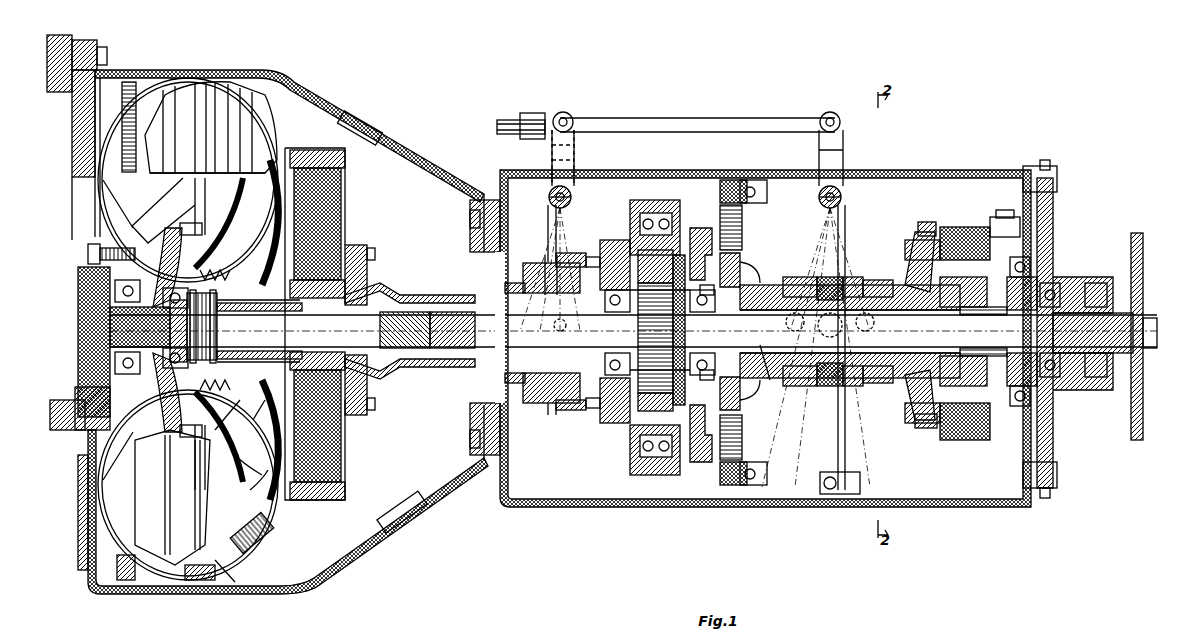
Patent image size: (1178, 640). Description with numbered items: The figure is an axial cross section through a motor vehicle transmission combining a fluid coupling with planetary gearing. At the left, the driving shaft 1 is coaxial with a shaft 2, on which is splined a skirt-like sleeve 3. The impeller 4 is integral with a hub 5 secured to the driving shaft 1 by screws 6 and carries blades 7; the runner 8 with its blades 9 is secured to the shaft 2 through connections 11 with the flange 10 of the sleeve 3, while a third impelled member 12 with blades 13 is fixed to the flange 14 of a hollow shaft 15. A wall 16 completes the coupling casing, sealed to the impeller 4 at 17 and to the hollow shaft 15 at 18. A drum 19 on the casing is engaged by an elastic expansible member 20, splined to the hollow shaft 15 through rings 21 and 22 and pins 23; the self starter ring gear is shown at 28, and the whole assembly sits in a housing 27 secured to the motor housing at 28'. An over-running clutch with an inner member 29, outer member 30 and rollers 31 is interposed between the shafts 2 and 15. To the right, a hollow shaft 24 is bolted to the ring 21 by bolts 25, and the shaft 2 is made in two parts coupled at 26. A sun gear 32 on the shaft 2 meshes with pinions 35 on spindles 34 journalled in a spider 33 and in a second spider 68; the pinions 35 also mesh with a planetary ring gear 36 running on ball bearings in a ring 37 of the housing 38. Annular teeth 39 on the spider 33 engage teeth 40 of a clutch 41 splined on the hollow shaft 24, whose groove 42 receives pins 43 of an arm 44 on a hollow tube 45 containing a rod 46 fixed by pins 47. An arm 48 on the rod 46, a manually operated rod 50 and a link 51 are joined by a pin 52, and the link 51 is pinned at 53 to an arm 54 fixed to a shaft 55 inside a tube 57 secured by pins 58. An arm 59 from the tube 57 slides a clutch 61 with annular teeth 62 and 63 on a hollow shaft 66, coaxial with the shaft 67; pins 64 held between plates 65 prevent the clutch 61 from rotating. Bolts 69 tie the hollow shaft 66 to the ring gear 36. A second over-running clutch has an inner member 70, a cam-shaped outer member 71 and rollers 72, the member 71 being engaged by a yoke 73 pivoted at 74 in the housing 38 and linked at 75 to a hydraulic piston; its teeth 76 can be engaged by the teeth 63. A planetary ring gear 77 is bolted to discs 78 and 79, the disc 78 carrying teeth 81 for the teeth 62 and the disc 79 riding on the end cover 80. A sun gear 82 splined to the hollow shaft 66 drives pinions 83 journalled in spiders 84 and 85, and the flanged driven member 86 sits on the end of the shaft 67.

The driving shaft 1 is at (80, 318).
The shaft 2 is at (130, 330).
The sleeve 3 is at (210, 265).
The impeller 4 is at (105, 535).
The hub 5 is at (120, 365).
The screws 6 is at (88, 253).
The blades 7 is at (125, 195).
The runner 8 is at (230, 583).
The blades 9 is at (182, 180).
The flange 10 is at (180, 225).
The connections 11 is at (195, 205).
The impelled member 12 is at (260, 483).
The blades 13 is at (251, 468).
The flange 14 is at (165, 268).
The hollow shaft 15 is at (310, 311).
The wall 16 is at (240, 120).
The seal location 17 is at (205, 85).
The seal location 18 is at (238, 255).
The drum 19 is at (305, 150).
The elastic expansible member 20 is at (345, 205).
The ring 21 is at (352, 248).
The ring 22 is at (256, 423).
The pins 23 is at (258, 331).
The hollow shaft 24 is at (420, 295).
The bolts 25 is at (375, 254).
The coupling 26 is at (420, 350).
The housing 27 is at (440, 470).
The self starter ring gear 28 is at (97, 314).
The motor housing attachment 28' is at (64, 302).
The inner member 29 is at (232, 326).
The outer member 30 is at (220, 326).
The rollers 31 is at (225, 425).
The sun gear 32 is at (661, 330).
The spider 33 is at (611, 333).
The spindles 34 is at (655, 353).
The pinions 35 is at (641, 369).
The planetary ring gear 36 is at (625, 240).
The ring 37 is at (652, 202).
The housing 38 is at (615, 503).
The annular teeth 39 is at (575, 256).
The teeth 40 is at (600, 262).
The clutch 41 is at (540, 265).
The groove 42 is at (547, 255).
The pins 43 is at (568, 327).
The arm 44 is at (558, 230).
The hollow tube 45 is at (550, 202).
The rod 46 is at (552, 190).
The pins 47 is at (565, 197).
The arm 48 is at (575, 160).
The manually operated rod 50 is at (505, 118).
The link 51 is at (660, 118).
The pin 52 is at (564, 112).
The pin 53 is at (830, 112).
The arm 54 is at (843, 160).
The shaft 55 is at (822, 190).
The hollow tube 57 is at (838, 203).
The pins 58 is at (819, 197).
The arm 59 is at (845, 230).
The clutch 61 is at (828, 386).
The annular teeth 62 is at (850, 277).
The annular teeth 63 is at (795, 277).
The pins 64 is at (874, 324).
The plates 65 is at (786, 322).
The hollow shaft 66 is at (900, 310).
The shaft 67 is at (760, 374).
The spider 68 is at (695, 230).
The bolts 69 is at (703, 370).
The inner member 70 is at (754, 330).
The outer member 71 is at (740, 250).
The rollers 72 is at (740, 400).
The yoke 73 is at (742, 228).
The pivot point 74 is at (728, 180).
The link end 75 is at (740, 475).
The teeth 76 is at (775, 285).
The planetary ring gear 77 is at (960, 240).
The disc 78 is at (912, 262).
The disc 79 is at (1010, 235).
The end cover 80 is at (1053, 238).
The teeth 81 is at (876, 280).
The sun gear 82 is at (965, 290).
The pinions 83 is at (918, 229).
The spider 84 is at (1020, 295).
The spider 85 is at (925, 405).
The flanged driven member 86 is at (1131, 402).